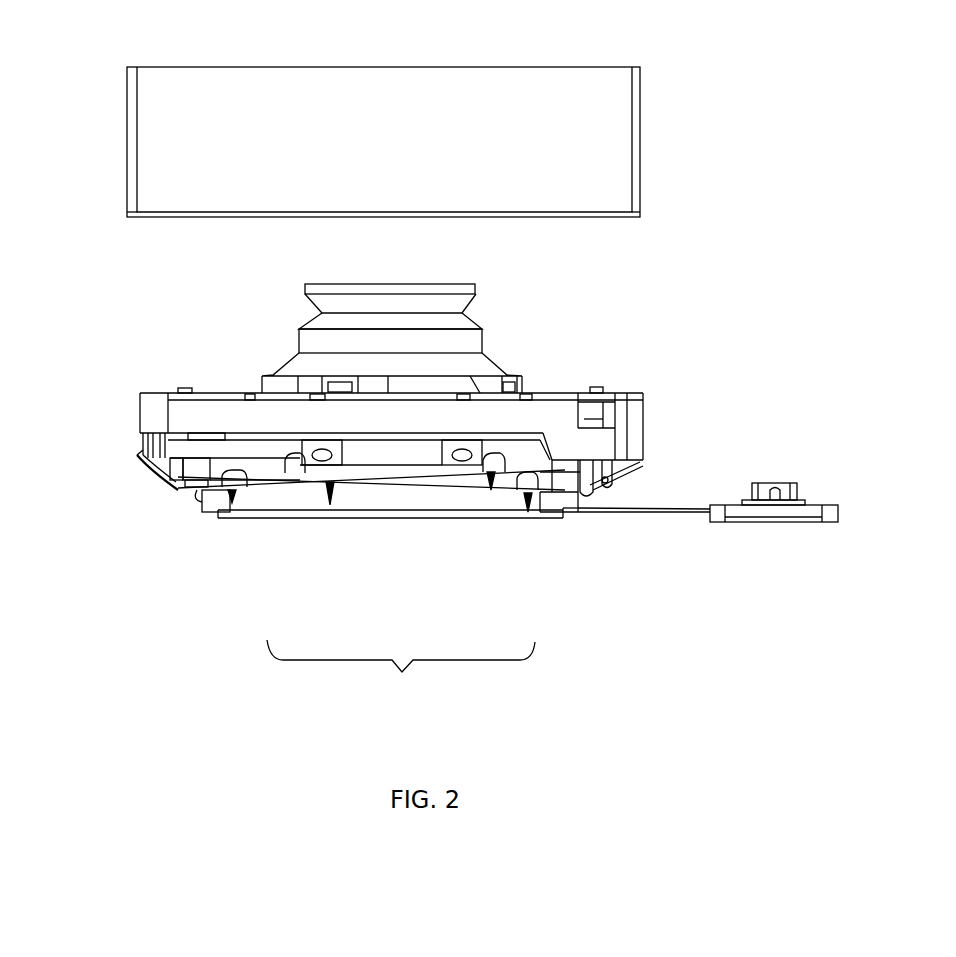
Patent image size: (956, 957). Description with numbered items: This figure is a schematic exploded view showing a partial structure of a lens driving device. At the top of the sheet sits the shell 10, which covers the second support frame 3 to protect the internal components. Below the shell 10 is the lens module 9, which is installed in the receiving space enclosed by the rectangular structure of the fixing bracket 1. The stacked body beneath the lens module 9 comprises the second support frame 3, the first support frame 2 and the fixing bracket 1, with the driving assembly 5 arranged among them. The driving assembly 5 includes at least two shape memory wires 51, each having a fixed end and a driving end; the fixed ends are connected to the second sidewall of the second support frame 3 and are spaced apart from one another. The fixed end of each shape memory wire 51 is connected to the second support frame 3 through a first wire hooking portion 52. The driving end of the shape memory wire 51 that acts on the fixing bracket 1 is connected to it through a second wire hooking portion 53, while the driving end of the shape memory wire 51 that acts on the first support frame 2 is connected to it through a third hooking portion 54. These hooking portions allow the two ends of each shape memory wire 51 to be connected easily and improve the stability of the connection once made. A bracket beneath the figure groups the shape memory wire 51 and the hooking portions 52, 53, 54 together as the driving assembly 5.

The shell 10 is at (148, 138).
The lens module 9 is at (327, 336).
The second support frame 3 is at (150, 417).
The first support frame 2 is at (180, 447).
The fixing bracket 1 is at (212, 500).
The driving assembly 5 is at (393, 579).
The shape memory wire 51 is at (330, 482).
The first wire hooking portion 52 is at (493, 462).
The second wire hooking portion 53 is at (525, 488).
The third hooking portion 54 is at (233, 492).